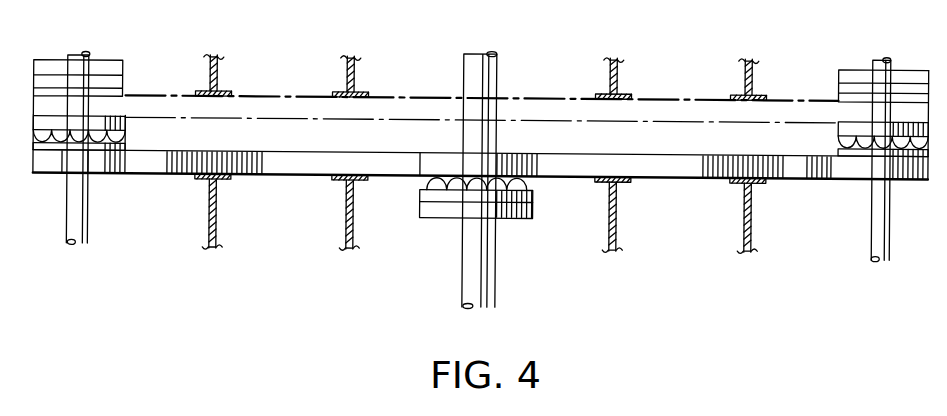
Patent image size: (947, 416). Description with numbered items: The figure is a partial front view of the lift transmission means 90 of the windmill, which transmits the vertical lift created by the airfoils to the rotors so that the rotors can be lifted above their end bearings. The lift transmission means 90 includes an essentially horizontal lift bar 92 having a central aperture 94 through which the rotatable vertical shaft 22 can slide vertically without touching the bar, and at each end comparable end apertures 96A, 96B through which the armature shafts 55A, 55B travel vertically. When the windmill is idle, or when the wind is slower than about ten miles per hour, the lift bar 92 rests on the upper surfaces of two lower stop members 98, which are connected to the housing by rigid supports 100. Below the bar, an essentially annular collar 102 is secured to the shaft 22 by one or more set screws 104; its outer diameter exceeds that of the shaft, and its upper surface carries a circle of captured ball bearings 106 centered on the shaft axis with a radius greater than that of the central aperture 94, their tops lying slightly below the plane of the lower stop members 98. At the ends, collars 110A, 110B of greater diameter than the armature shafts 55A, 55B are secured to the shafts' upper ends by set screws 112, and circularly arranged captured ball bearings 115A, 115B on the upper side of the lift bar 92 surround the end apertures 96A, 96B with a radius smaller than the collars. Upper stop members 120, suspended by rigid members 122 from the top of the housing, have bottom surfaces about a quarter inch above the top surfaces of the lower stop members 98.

The rotatable vertical shaft 22 is at (488, 74).
The armature shaft 55A is at (88, 230).
The armature shaft 55B is at (875, 238).
The lift transmission means 90 is at (449, 96).
The lift bar 92 is at (285, 166).
The central aperture 94 is at (453, 166).
The end aperture 96A is at (62, 164).
The end aperture 96B is at (902, 183).
The lower stop member 98 is at (337, 182).
The rigid support 100 is at (348, 227).
The annular collar 102 is at (420, 207).
The set screw 104 is at (477, 209).
The captured ball bearings 106 is at (535, 200).
The collar 110A is at (125, 130).
The collar 110B is at (838, 131).
The set screw 112 is at (110, 119).
The captured ball bearings 115A is at (123, 160).
The captured ball bearings 115B is at (866, 177).
The upper stop member 120 is at (340, 94).
The rigid member 122 is at (356, 63).